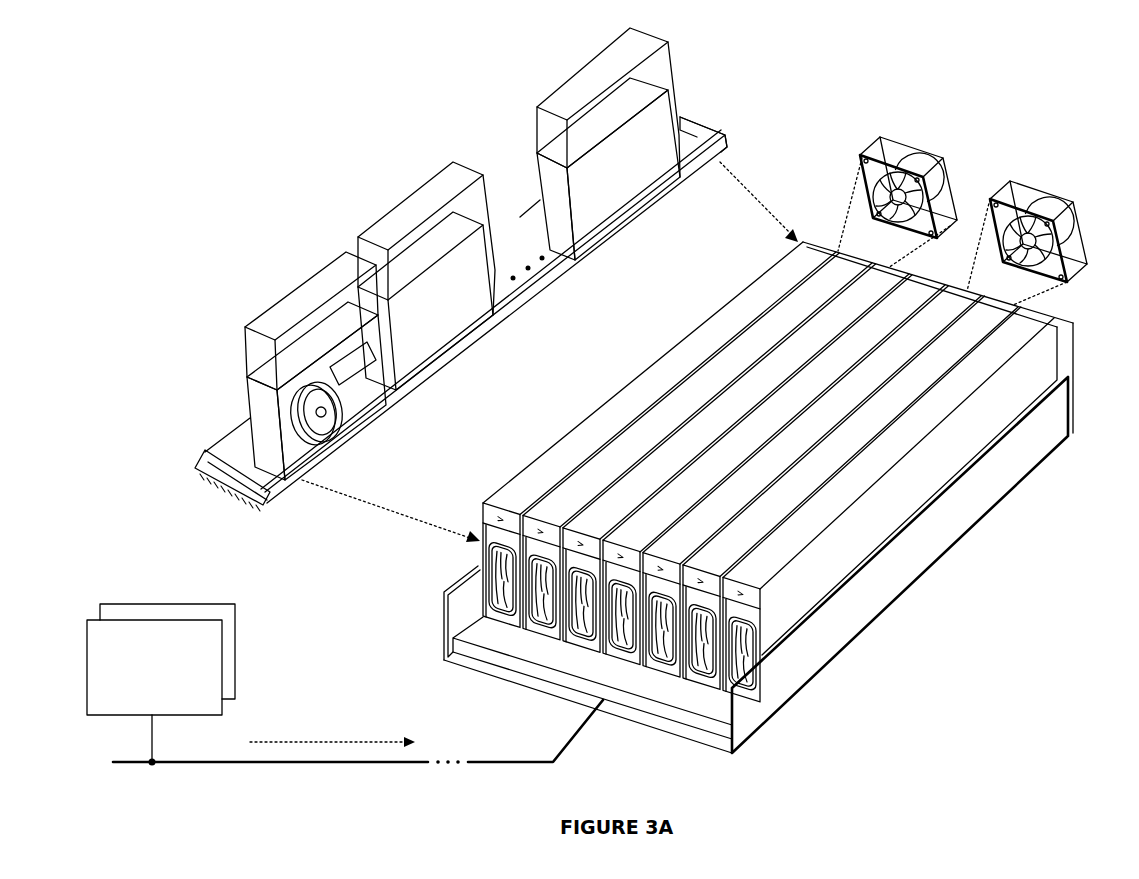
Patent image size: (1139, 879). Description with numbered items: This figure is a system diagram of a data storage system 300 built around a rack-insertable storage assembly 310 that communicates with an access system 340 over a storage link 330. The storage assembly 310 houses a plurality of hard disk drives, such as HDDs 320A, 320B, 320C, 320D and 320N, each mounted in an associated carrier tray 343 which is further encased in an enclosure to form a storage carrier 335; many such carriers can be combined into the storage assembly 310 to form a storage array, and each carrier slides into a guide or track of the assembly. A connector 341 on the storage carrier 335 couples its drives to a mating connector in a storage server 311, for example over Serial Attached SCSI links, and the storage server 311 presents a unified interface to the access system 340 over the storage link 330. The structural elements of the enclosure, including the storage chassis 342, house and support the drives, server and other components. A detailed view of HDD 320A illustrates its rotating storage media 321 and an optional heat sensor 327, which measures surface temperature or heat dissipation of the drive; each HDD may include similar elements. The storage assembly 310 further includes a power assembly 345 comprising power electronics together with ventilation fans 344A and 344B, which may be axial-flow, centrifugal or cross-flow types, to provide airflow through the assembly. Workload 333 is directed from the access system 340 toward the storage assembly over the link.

The data storage system 300 is at (238, 189).
The storage assembly 310 is at (1082, 456).
The storage server 311 is at (690, 654).
The hard disk drive 320A is at (316, 391).
The hard disk drive 320B is at (311, 321).
The hard disk drive 320C is at (425, 301).
The hard disk drive 320D is at (426, 238).
The hard disk drive 320N is at (608, 169).
The rotating storage media 321 is at (338, 418).
The heat sensor 327 is at (353, 363).
The storage link 330 is at (612, 501).
The workload 333 is at (332, 737).
The storage carrier 335 is at (716, 56).
The access system 340 is at (140, 700).
The connector 341 is at (203, 462).
The storage chassis 342 is at (480, 566).
The carrier tray 343 is at (695, 118).
The ventilation fan 344A is at (898, 140).
The ventilation fan 344B is at (1035, 182).
The power assembly 345 is at (833, 239).